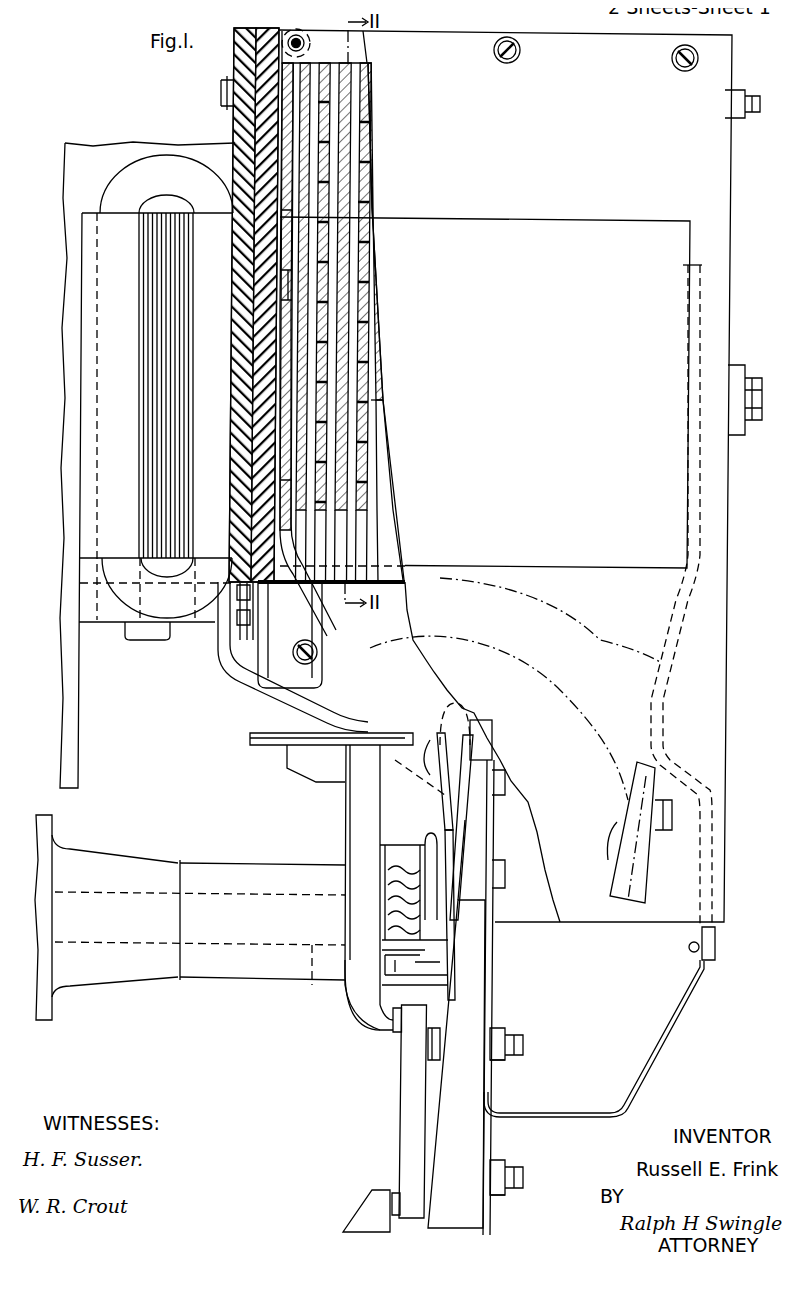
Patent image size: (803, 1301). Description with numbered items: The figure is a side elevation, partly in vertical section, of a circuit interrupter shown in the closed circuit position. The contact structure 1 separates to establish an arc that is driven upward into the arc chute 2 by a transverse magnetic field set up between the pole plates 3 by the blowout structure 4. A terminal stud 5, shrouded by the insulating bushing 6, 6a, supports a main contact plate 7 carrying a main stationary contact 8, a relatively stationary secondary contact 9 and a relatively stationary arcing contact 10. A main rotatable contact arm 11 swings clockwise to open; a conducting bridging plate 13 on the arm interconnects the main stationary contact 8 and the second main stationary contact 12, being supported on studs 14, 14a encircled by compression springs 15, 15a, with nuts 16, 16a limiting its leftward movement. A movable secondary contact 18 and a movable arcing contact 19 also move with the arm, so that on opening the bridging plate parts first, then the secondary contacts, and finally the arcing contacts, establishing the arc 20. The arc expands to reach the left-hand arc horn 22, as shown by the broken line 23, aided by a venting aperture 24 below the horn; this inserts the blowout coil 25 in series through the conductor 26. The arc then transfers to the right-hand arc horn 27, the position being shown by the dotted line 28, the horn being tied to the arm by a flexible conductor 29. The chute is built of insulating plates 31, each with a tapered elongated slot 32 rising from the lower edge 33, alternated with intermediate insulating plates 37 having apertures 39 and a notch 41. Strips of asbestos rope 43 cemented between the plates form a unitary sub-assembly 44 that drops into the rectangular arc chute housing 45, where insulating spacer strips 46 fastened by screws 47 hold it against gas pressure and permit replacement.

The contact structure 1 is at (341, 1064).
The arc chute 2 is at (510, 338).
The pole plates 3 is at (607, 568).
The blowout structure 4 is at (110, 434).
The terminal stud 5 is at (304, 986).
The insulating bushing 6 is at (92, 858).
The insulating bushing 6a is at (195, 862).
The main contact plate 7 is at (338, 840).
The main stationary contact 8 is at (372, 1024).
The relatively stationary secondary contact 9 is at (424, 942).
The relatively stationary arcing contact 10 is at (432, 739).
The main rotatable contact arm 11 is at (484, 1114).
The second main stationary contact 12 is at (364, 1199).
The conducting bridging plate 13 is at (392, 1122).
The stud 14 is at (516, 1024).
The stud 14a is at (518, 1160).
The compression spring 15 is at (426, 1020).
The compression spring 15a is at (422, 1120).
The nut 16 is at (490, 1052).
The nut 16a is at (489, 1187).
The movable secondary contact 18 is at (447, 886).
The movable arcing contact 19 is at (462, 734).
The arc 20 is at (444, 700).
The left-hand arc horn 22 is at (310, 638).
The arc 23 is at (560, 670).
The venting aperture 24 is at (259, 703).
The blowout coil 25 is at (170, 609).
The conductor 26 is at (210, 662).
The right-hand arc horn 27 is at (642, 697).
The arc 28 is at (574, 602).
The flexible conductor 29 is at (634, 1066).
The insulating plate 31 is at (290, 315).
The tapered elongated slot 32 is at (375, 512).
The lower edge 33 is at (316, 583).
The intermediate insulating plate 37 is at (322, 480).
The apertures 39 is at (354, 287).
The notch 41 is at (354, 539).
The asbestos rope 43 is at (338, 256).
The sub-assembly 44 is at (387, 142).
The arc chute housing 45 is at (586, 916).
The insulating spacer strip 46 is at (327, 33).
The screw 47 is at (285, 28).